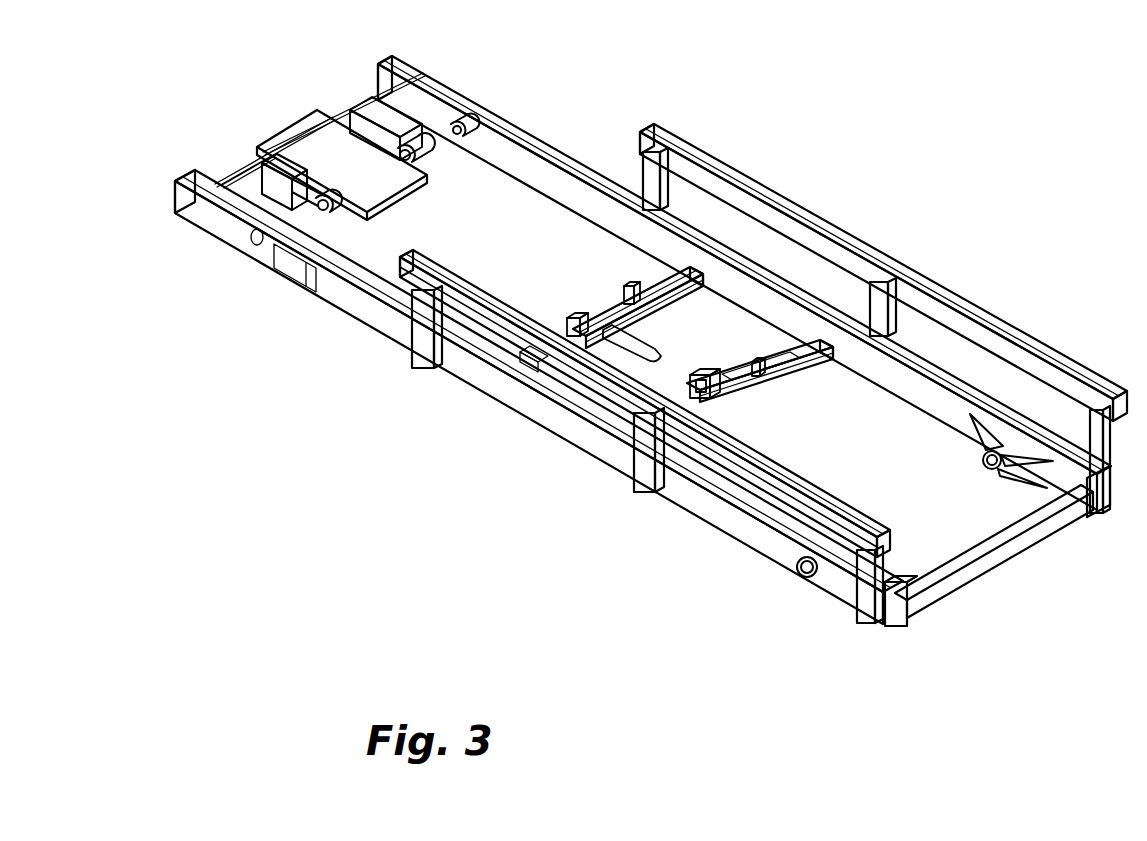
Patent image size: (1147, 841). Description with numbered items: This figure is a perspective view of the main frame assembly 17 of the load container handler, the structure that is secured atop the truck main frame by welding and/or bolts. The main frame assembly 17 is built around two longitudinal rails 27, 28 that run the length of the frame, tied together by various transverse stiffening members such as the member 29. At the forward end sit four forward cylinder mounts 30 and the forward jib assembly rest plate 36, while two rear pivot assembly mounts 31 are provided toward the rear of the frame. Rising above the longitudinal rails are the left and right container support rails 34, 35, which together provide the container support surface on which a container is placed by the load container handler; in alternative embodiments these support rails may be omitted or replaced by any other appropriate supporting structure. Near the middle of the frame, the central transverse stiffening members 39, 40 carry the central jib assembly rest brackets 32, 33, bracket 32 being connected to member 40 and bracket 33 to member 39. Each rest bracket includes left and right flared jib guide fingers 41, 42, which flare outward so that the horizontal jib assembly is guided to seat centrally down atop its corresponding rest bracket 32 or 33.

The main frame assembly 17 is at (952, 119).
The longitudinal rail 27 is at (357, 318).
The longitudinal rail 28 is at (528, 140).
The transverse stiffening member 29 is at (666, 280).
The forward cylinder mount 30 is at (224, 182).
The rear pivot assembly mount 31 is at (993, 472).
The central jib assembly rest bracket 32 is at (603, 315).
The central jib assembly rest bracket 33 is at (757, 381).
The left container support rail 34 is at (467, 312).
The right container support rail 35 is at (754, 190).
The forward jib assembly rest plate 36 is at (433, 191).
The central transverse stiffening member 39 is at (793, 385).
The central transverse stiffening member 40 is at (678, 298).
The left flared jib guide finger 41 is at (567, 320).
The right flared jib guide finger 42 is at (623, 283).